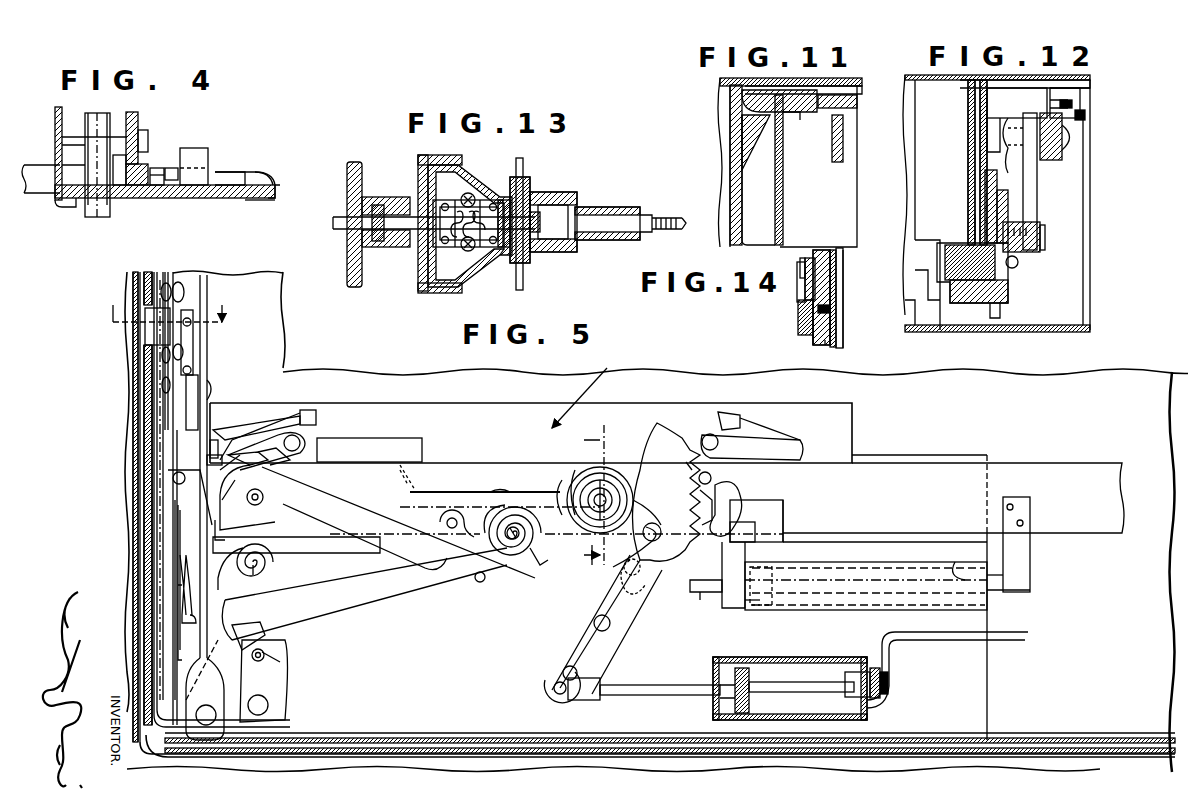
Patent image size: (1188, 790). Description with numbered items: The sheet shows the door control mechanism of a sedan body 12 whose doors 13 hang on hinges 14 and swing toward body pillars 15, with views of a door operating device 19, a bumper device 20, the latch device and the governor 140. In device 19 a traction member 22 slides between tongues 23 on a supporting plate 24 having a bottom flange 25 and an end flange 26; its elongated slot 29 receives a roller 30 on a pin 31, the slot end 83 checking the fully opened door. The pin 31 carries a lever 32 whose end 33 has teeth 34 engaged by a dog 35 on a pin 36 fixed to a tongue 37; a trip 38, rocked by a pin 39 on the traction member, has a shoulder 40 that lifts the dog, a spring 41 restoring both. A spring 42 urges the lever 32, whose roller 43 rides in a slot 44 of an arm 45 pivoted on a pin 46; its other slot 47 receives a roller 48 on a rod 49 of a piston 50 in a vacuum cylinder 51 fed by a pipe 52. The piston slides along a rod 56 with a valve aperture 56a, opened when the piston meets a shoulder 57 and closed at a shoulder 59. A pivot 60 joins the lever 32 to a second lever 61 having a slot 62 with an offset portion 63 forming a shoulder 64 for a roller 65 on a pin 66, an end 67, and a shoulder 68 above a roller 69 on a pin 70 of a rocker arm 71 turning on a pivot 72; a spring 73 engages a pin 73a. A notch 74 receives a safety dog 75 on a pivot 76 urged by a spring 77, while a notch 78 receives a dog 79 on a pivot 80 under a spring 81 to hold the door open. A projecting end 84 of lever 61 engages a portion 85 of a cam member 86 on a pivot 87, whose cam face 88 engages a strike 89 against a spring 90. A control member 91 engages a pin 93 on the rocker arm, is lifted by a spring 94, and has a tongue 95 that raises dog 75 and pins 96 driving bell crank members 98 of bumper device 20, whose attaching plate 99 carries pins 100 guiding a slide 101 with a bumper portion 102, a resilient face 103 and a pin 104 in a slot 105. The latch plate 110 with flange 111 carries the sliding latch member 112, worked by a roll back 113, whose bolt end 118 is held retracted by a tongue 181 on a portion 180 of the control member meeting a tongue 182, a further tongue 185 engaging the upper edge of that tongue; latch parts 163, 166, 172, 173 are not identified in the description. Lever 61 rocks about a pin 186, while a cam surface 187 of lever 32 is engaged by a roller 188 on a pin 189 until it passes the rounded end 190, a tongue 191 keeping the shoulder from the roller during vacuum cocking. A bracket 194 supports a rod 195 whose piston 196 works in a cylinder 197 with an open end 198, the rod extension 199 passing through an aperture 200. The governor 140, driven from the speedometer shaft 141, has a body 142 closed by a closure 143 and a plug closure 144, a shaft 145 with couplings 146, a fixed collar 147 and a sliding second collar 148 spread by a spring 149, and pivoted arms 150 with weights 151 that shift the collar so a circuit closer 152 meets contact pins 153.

In FIG. 5, the section line 12- 12 is at (167, 306).
In FIG. 11, the casing wall 13 is at (852, 220).
In FIG. 14, the casing wall 13 is at (843, 318).
In FIG. 12, the casing wall 13 is at (1082, 285).
In FIG. 5, the section line 14- 14 is at (586, 495).
In FIG. 11, the side plate 15 is at (714, 92).
In FIG. 12, the side plate 15 is at (912, 80).
In FIG. 5, the side plate 15 is at (142, 283).
In FIG. 5, the mechanism assembly 19 is at (587, 390).
In FIG. 5, the frame plate 20 is at (142, 355).
In FIG. 11, the guide rail 22 is at (857, 103).
In FIG. 14, the guide rail 22 is at (836, 330).
In FIG. 5, the guide rail 22 is at (933, 461).
In FIG. 5, the slide rail 23 is at (405, 462).
In FIG. 11, the top rail 24 is at (860, 90).
In FIG. 14, the top rail 24 is at (843, 348).
In FIG. 12, the top rail 24 is at (1092, 88).
In FIG. 5, the top rail 24 is at (855, 420).
In FIG. 5, the bottom rail 25 is at (973, 734).
In FIG. 12, the channel member 26 is at (978, 130).
In FIG. 5, the channel member 26 is at (165, 431).
In FIG. 5, the link bar 29 is at (503, 492).
In FIG. 14, the stop 30 is at (830, 308).
In FIG. 14, the shaft 31 is at (832, 295).
In FIG. 5, the shaft 31 is at (595, 555).
In FIG. 14, the ratchet wheel 32 is at (820, 345).
In FIG. 5, the ratchet wheel 32 is at (670, 445).
In FIG. 5, the pivot pin 33 is at (703, 444).
In FIG. 5, the ratchet teeth 34 is at (686, 478).
In FIG. 5, the push rod 35 is at (697, 578).
In FIG. 5, the housing block 36 is at (750, 512).
In FIG. 5, the housing wall 37 is at (784, 508).
In FIG. 5, the pawl 38 is at (735, 492).
In FIG. 5, the pivot pin 39 is at (712, 478).
In FIG. 5, the pawl tooth 40 is at (703, 507).
In FIG. 5, the plunger 41 is at (733, 575).
In FIG. 14, the disc hub 42 is at (805, 335).
In FIG. 5, the disc hub 42 is at (566, 478).
In FIG. 5, the pawl arm 43 is at (645, 585).
In FIG. 5, the lever edge 44 is at (635, 605).
In FIG. 5, the operating lever 45 is at (605, 648).
In FIG. 5, the lever hole 46 is at (596, 620).
In FIG. 5, the pivot 47 is at (566, 665).
In FIG. 5, the lever pivot pin 48 is at (552, 686).
In FIG. 5, the piston rod 49 is at (635, 688).
In FIG. 5, the piston 50 is at (752, 680).
In FIG. 5, the cylinder 51 is at (812, 663).
In FIG. 5, the bracket arm 52 is at (928, 640).
In FIG. 5, the piston rod 56 is at (792, 682).
In FIG. 5, the packing nut 56a is at (890, 690).
In FIG. 5, the piston head 57 is at (740, 668).
In FIG. 5, the cylinder end 59 is at (850, 695).
In FIG. 5, the spring pin 60 is at (512, 545).
In FIG. 5, the lever arm 61 is at (428, 590).
In FIG. 5, the lever arm 62 is at (400, 600).
In FIG. 12, the latch 63 is at (1080, 108).
In FIG. 5, the latch 63 is at (248, 458).
In FIG. 5, the latch nose 64 is at (278, 462).
In FIG. 5, the pivot 65 is at (265, 505).
In FIG. 5, the pivot pin 66 is at (250, 494).
In FIG. 5, the lever 67 is at (228, 612).
In FIG. 5, the lever lug 68 is at (258, 628).
In FIG. 5, the link 69 is at (268, 660).
In FIG. 5, the pivot pin 70 is at (254, 660).
In FIG. 5, the lever plate 71 is at (288, 690).
In FIG. 5, the hole 72 is at (268, 710).
In FIG. 5, the spiral spring 73 is at (490, 540).
In FIG. 5, the spring hook 73a is at (452, 530).
In FIG. 5, the latch arm 74 is at (228, 455).
In FIG. 12, the trip lever 75 is at (1082, 95).
In FIG. 5, the trip lever 75 is at (252, 440).
In FIG. 5, the pivot pin 76 is at (302, 440).
In FIG. 5, the stop block 77 is at (310, 412).
In FIG. 5, the hub flange 78 is at (582, 472).
In FIG. 5, the pawl lever 79 is at (765, 445).
In FIG. 5, the pawl stop 80 is at (712, 432).
In FIG. 5, the pawl edge 81 is at (750, 425).
In FIG. 5, the connecting rod 83 is at (400, 487).
In FIG. 11, the top plate 84 is at (830, 86).
In FIG. 12, the top plate 84 is at (1065, 84).
In FIG. 5, the top plate 84 is at (207, 460).
In FIG. 11, the cover strip 85 is at (820, 110).
In FIG. 12, the cover strip 85 is at (1050, 78).
In FIG. 5, the cover strip 85 is at (212, 530).
In FIG. 11, the block 86 is at (790, 110).
In FIG. 12, the block 86 is at (1000, 100).
In FIG. 5, the block 86 is at (178, 532).
In FIG. 5, the pivot 87 is at (171, 480).
In FIG. 11, the wall 88 is at (742, 110).
In FIG. 5, the wall 88 is at (166, 548).
In FIG. 11, the wedge 89 is at (740, 135).
In FIG. 5, the wedge 89 is at (146, 522).
In FIG. 5, the spring arm 90 is at (181, 587).
In FIG. 4, the bar 91 is at (140, 120).
In FIG. 11, the bar 91 is at (845, 152).
In FIG. 12, the bar 91 is at (1055, 160).
In FIG. 5, the bar 91 is at (200, 366).
In FIG. 5, the pivot hole 93 is at (203, 725).
In FIG. 5, the spiral spring 94 is at (228, 582).
In FIG. 12, the stop pin 95 is at (1085, 120).
In FIG. 5, the stop pin 95 is at (210, 450).
In FIG. 12, the roller 96 is at (1075, 140).
In FIG. 5, the roller 96 is at (214, 394).
In FIG. 12, the slide rod 98 is at (1037, 210).
In FIG. 5, the slide rod 98 is at (207, 375).
In FIG. 12, the roller 99 is at (985, 180).
In FIG. 5, the roller 99 is at (169, 280).
In FIG. 12, the roller 100 is at (1008, 200).
In FIG. 5, the roller 100 is at (183, 280).
In FIG. 12, the slide block 101 is at (1016, 266).
In FIG. 5, the slide block 101 is at (190, 350).
In FIG. 12, the base block 102 is at (975, 303).
In FIG. 5, the base block 102 is at (145, 338).
In FIG. 12, the pin 103 is at (962, 245).
In FIG. 12, the nut 104 is at (1040, 235).
In FIG. 12, the washer 105 is at (1043, 250).
In FIG. 4, the plate edge 110 is at (278, 193).
In FIG. 4, the side wall 111 is at (56, 124).
In FIG. 4, the ramp 112 is at (272, 178).
In FIG. 4, the base plate 113 is at (78, 198).
In FIG. 4, the support 118 is at (36, 193).
In FIG. 13, the valve body 140 is at (548, 190).
In FIG. 13, the hand wheel 141 is at (338, 228).
In FIG. 13, the housing 142 is at (470, 271).
In FIG. 13, the flange 143 is at (422, 255).
In FIG. 13, the stem 144 is at (600, 241).
In FIG. 13, the seat 145 is at (548, 252).
In FIG. 13, the nut 146 is at (376, 247).
In FIG. 13, the spring cage 147 is at (490, 238).
In FIG. 13, the piston 148 is at (504, 198).
In FIG. 13, the screw 149 is at (462, 203).
In FIG. 13, the screw 150 is at (474, 194).
In FIG. 13, the screw 151 is at (465, 252).
In FIG. 13, the chamber 152 is at (553, 210).
In FIG. 13, the disc 153 is at (524, 170).
In FIG. 4, the block 163 is at (208, 157).
In FIG. 4, the lug 166 is at (206, 200).
In FIG. 4, the ramp plate 172 is at (240, 200).
In FIG. 4, the plate end 173 is at (262, 200).
In FIG. 4, the bracket 180 is at (150, 200).
In FIG. 4, the pin 181 is at (154, 170).
In FIG. 4, the post 182 is at (126, 200).
In FIG. 4, the block 185 is at (172, 167).
In FIG. 5, the pin 186 is at (481, 583).
In FIG. 5, the hub 187 is at (615, 485).
In FIG. 14, the ring 188 is at (830, 255).
In FIG. 5, the ring 188 is at (606, 488).
In FIG. 14, the ring 189 is at (816, 273).
In FIG. 5, the ring 189 is at (600, 475).
In FIG. 5, the disc 190 is at (652, 432).
In FIG. 5, the lug 191 is at (540, 570).
In FIG. 5, the bracket 194 is at (1030, 556).
In FIG. 5, the bracket foot 195 is at (1000, 592).
In FIG. 5, the housing 196 is at (782, 610).
In FIG. 5, the rod 197 is at (870, 572).
In FIG. 5, the rod end 198 is at (960, 565).
In FIG. 5, the pin 199 is at (703, 592).
In FIG. 5, the lug 200 is at (742, 606).